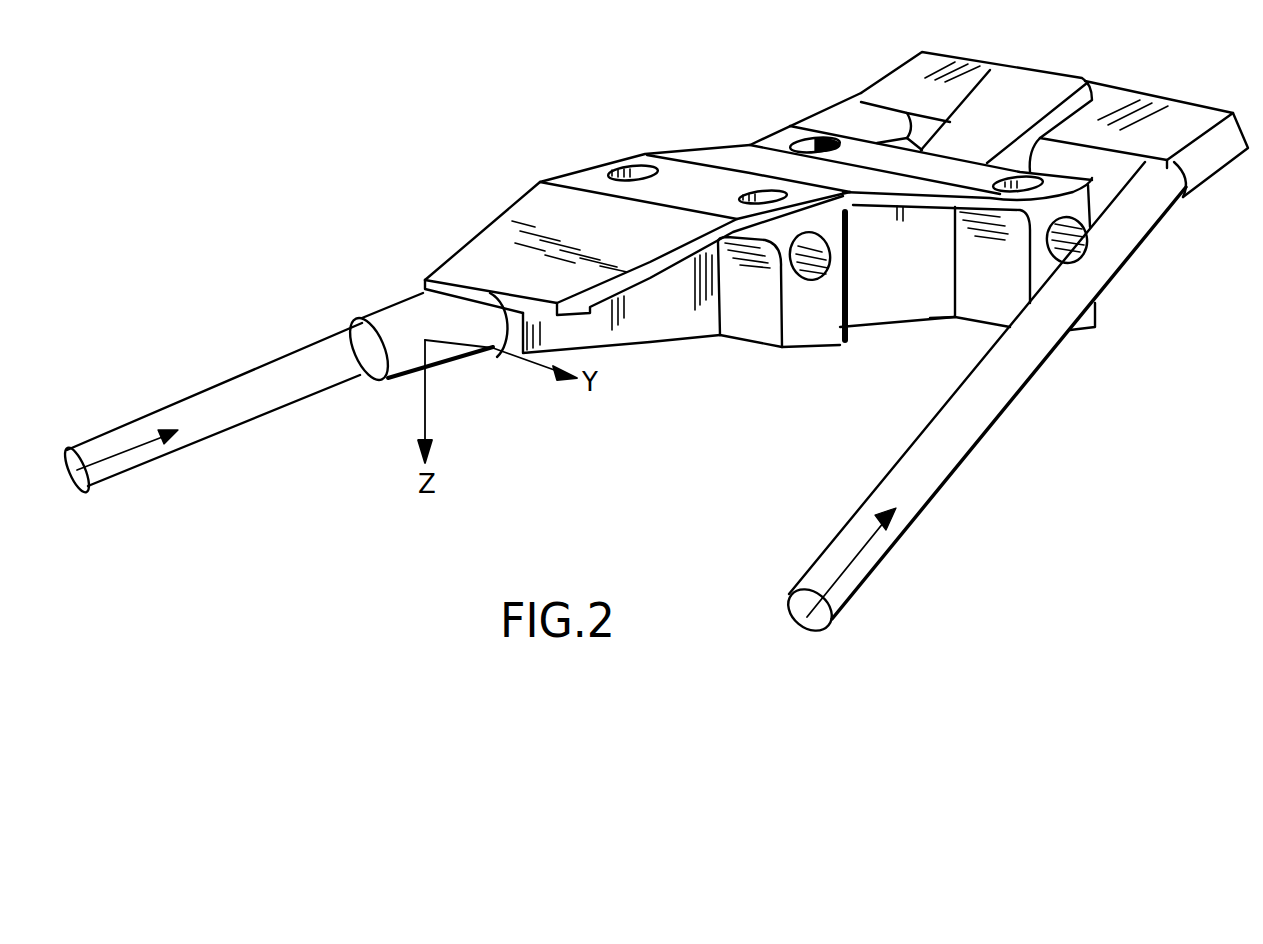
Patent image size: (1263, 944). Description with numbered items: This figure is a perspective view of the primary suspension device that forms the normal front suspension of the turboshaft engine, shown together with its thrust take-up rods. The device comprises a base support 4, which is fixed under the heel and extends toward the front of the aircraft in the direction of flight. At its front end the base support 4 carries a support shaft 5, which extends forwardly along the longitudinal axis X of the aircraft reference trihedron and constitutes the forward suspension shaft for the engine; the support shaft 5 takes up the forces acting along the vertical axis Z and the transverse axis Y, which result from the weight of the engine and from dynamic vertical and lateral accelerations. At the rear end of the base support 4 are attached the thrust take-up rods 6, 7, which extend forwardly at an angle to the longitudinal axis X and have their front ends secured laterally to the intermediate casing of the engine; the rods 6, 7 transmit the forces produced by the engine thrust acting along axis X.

The base support 4 is at (677, 178).
The support shaft 5 is at (390, 328).
The thrust take-up rod 6 is at (242, 413).
The thrust take-up rod 7 is at (982, 418).